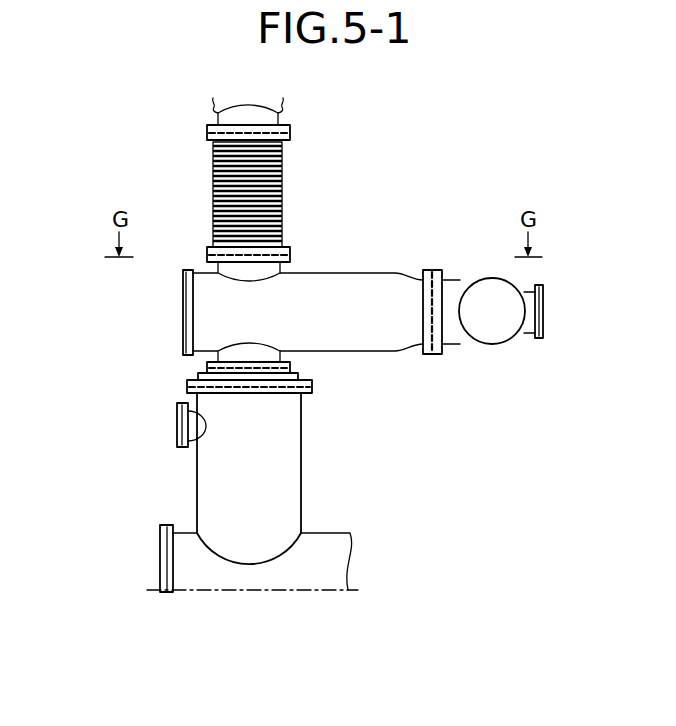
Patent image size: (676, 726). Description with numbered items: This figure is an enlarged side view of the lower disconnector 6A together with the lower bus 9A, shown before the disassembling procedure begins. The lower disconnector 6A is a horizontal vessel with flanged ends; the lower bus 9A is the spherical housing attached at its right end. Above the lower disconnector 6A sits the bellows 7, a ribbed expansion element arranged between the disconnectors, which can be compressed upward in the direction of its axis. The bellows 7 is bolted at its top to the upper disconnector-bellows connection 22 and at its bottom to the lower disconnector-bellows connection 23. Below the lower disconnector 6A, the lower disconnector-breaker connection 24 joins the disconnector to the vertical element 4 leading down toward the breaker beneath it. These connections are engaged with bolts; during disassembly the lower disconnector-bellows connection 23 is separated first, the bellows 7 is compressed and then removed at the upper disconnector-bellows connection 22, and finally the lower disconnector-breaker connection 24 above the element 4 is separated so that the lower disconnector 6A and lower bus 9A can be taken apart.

The upper disconnector-bellows connection 22 is at (207, 131).
The bellows 7 is at (282, 187).
The lower disconnector-bellows connection 23 is at (207, 244).
The lower disconnector 6A is at (355, 287).
The lower bus 9A is at (490, 335).
The lower disconnector-breaker connection 24 is at (187, 380).
The vessel / vertical pipe 4 is at (292, 487).